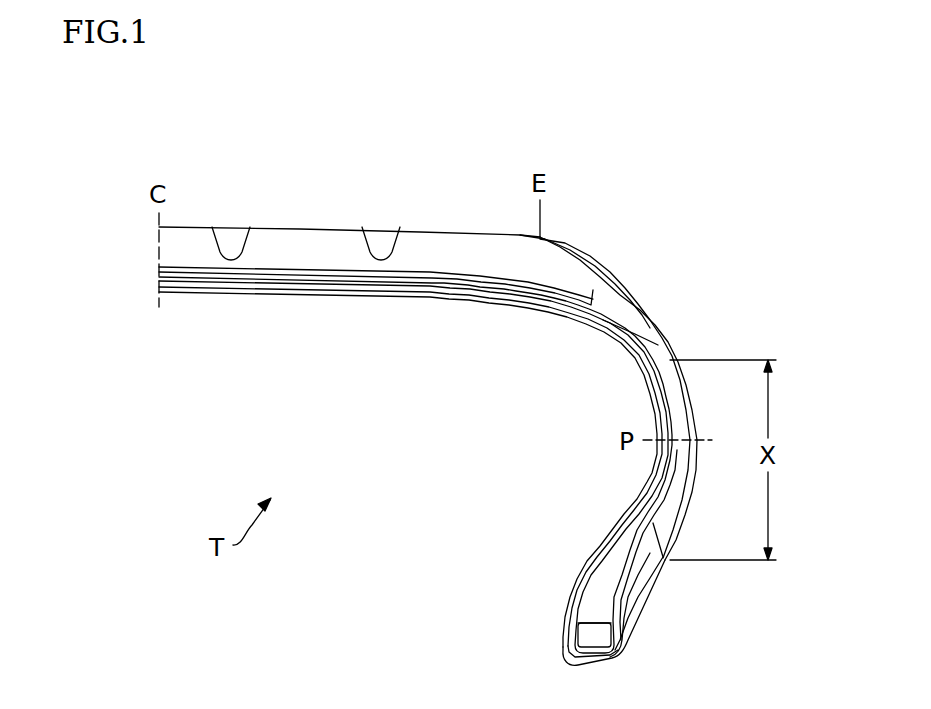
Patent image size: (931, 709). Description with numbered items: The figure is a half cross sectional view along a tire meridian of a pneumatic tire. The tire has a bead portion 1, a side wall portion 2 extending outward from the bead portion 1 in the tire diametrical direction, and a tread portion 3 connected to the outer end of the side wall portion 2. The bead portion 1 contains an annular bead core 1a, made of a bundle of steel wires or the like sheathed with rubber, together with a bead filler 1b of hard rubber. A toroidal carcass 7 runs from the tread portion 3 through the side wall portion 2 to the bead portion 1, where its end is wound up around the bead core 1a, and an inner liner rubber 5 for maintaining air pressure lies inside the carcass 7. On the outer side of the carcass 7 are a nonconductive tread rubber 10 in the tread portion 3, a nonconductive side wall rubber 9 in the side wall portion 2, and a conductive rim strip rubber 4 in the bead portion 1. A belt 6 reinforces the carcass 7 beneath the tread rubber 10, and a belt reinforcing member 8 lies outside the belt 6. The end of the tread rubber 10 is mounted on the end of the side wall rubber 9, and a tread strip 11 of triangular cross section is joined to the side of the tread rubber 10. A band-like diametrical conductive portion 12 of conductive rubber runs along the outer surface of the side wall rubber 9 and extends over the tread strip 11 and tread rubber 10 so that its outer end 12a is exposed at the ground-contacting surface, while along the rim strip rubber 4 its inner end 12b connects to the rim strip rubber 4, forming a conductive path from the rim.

The bead portion 1 is at (636, 651).
The bead core 1a is at (587, 637).
The bead filler 1b is at (600, 598).
The side wall portion 2 is at (710, 429).
The tread portion 3 is at (336, 222).
The rim strip rubber 4 is at (637, 596).
The inner liner rubber 5 is at (235, 291).
The belt 6 is at (315, 288).
The carcass 7 is at (515, 301).
The belt reinforcing member 8 is at (392, 275).
The side wall rubber 9 is at (683, 477).
The tread rubber 10 is at (433, 237).
The tread strip 11 is at (655, 338).
The diametrical conductive portion 12 is at (693, 390).
The outer end 12a is at (496, 230).
The inner end 12b is at (645, 581).